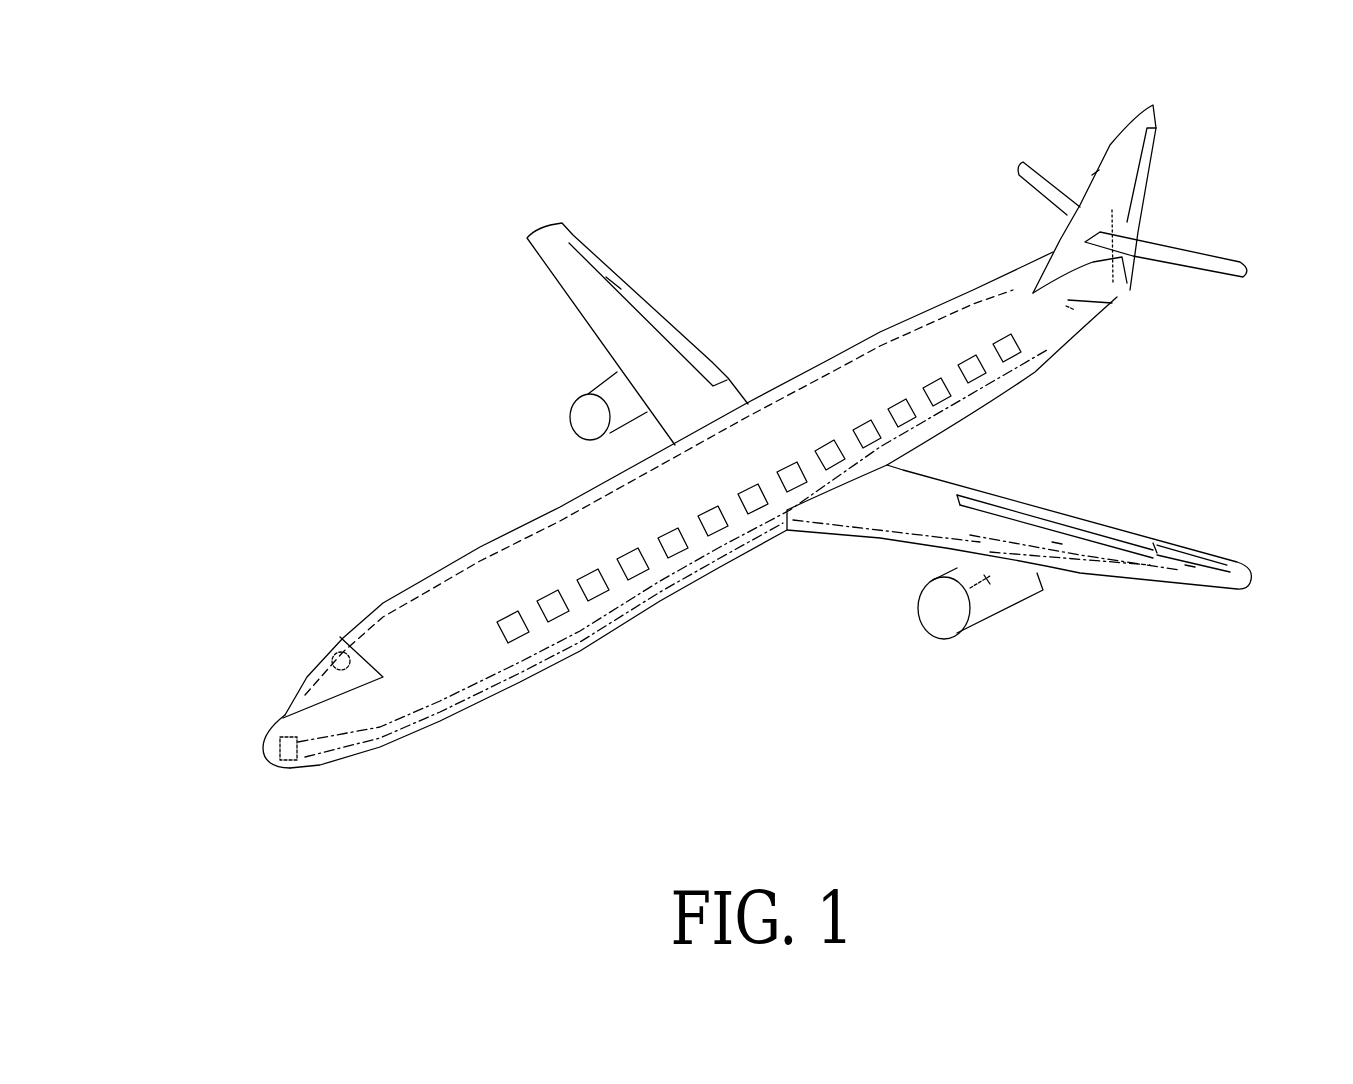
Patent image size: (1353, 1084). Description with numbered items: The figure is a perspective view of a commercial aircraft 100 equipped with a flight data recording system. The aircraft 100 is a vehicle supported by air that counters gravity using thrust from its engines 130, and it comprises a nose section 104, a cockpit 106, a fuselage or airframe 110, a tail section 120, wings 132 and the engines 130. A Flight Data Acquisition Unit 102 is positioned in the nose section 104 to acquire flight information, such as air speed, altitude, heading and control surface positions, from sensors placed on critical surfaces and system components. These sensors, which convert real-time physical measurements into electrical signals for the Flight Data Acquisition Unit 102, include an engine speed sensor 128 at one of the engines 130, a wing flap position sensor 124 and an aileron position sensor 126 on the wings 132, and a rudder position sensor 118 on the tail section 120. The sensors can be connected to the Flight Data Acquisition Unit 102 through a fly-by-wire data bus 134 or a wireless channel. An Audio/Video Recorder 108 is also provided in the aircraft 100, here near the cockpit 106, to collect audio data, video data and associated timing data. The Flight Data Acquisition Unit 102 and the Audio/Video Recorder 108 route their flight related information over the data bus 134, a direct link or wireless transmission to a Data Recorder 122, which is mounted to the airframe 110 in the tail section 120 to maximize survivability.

The aircraft 100 is at (764, 219).
The Flight Data Acquisition Unit 102 is at (275, 769).
The nose section 104 is at (271, 726).
The cockpit 106 is at (303, 690).
The Audio/Video Recorder 108 is at (336, 652).
The airframe 110 is at (423, 580).
The rudder position sensor 118 is at (1095, 173).
The tail section 120 is at (1190, 195).
The Data Recorder 122 is at (1112, 303).
The wing flap position sensor 124 is at (1057, 542).
The aileron position sensor 126 is at (1190, 566).
The engine speed sensor 128 is at (988, 582).
The engines 130 is at (599, 380).
The wings 132 is at (543, 262).
The data bus 134 is at (590, 500).